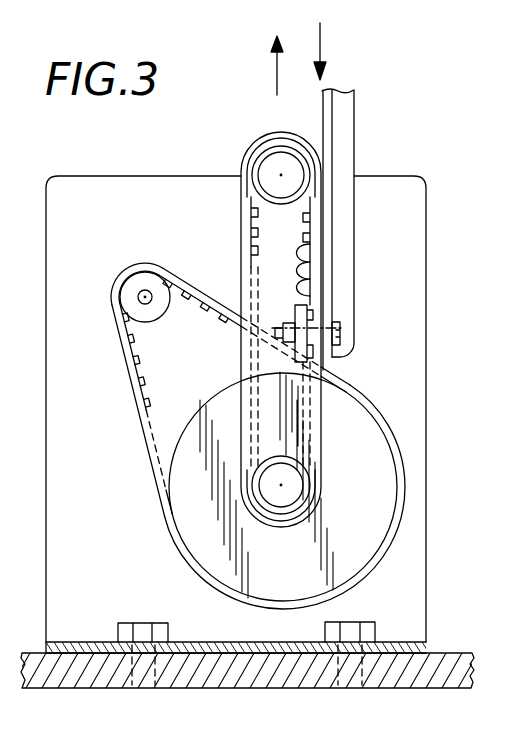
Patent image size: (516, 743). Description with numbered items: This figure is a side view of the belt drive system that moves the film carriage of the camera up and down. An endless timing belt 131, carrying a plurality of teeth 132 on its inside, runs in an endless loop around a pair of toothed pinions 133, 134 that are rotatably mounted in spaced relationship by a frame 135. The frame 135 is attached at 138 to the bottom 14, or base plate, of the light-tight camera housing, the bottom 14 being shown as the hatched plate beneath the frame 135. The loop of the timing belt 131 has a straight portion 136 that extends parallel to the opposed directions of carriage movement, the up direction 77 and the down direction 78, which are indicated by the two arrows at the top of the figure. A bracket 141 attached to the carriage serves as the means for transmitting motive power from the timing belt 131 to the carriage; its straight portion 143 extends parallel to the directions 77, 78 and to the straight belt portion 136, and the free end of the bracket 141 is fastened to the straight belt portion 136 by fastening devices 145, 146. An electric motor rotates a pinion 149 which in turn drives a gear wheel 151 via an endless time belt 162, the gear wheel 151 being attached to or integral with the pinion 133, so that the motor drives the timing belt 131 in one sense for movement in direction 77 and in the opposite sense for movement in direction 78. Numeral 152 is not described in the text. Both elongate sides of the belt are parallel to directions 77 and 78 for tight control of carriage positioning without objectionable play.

The bottom 14 is at (440, 652).
The up direction 77 is at (276, 65).
The down direction 78 is at (324, 55).
The endless timing belt 131 is at (239, 200).
The teeth 132 is at (306, 284).
The toothed pinion 133 is at (293, 495).
The toothed pinion 134 is at (268, 166).
The frame 135 is at (427, 270).
The straight portion 136 is at (323, 410).
The attachment point 138 is at (130, 623).
The bracket 141 is at (350, 123).
The straight portion 143 is at (333, 222).
The fastening device 145 is at (293, 318).
The fastening device 146 is at (342, 326).
The pinion 149 is at (143, 287).
The gear wheel 151 is at (180, 528).
The upper belt run 152 is at (140, 420).
The endless time belt 162 is at (239, 348).